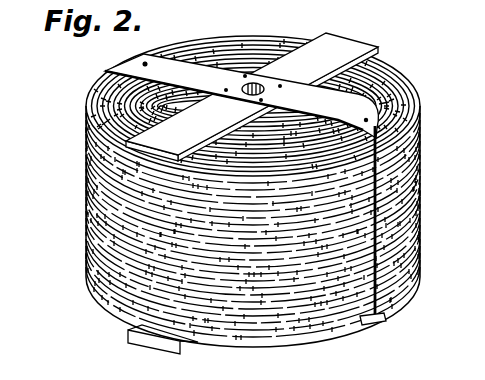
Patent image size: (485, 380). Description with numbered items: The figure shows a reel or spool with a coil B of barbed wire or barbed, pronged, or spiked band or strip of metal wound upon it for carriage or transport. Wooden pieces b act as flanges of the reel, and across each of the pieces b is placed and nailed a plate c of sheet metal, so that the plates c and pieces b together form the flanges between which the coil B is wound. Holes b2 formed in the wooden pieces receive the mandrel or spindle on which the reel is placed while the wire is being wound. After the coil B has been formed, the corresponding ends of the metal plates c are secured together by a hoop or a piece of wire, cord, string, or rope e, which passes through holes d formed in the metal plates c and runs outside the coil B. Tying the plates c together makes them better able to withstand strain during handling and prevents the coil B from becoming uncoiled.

The coil B is at (253, 191).
The pieces of wood b is at (148, 348).
The plate of sheet metal c is at (353, 330).
The holes b2 is at (236, 78).
The holes d is at (138, 54).
The wire, cord, string, or rope e is at (136, 56).